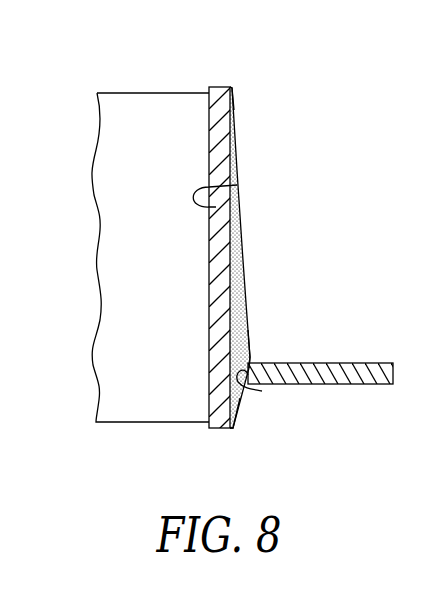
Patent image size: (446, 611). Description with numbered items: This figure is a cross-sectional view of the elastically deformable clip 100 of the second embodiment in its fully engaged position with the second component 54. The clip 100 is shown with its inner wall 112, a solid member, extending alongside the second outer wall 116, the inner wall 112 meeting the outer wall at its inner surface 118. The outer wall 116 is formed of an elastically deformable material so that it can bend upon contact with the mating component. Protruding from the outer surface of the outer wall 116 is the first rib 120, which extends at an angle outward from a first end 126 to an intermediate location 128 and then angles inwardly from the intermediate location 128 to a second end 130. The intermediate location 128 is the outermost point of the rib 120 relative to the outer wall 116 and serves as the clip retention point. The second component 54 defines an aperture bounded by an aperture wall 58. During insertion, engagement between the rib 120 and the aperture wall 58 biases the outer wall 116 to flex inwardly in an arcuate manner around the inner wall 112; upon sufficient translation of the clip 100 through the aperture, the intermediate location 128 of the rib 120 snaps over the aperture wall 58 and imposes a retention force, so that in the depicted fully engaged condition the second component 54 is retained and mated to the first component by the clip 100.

The elastically deformable clip 100 is at (239, 242).
The inner wall 112 is at (118, 110).
The second outer wall 116 is at (200, 111).
The inner surface 118 is at (237, 185).
The first rib 120 is at (250, 257).
The first end 126 is at (232, 88).
The intermediate location 128 is at (253, 353).
The second end 130 is at (232, 430).
The second component 54 is at (340, 354).
The aperture wall 58 is at (262, 391).